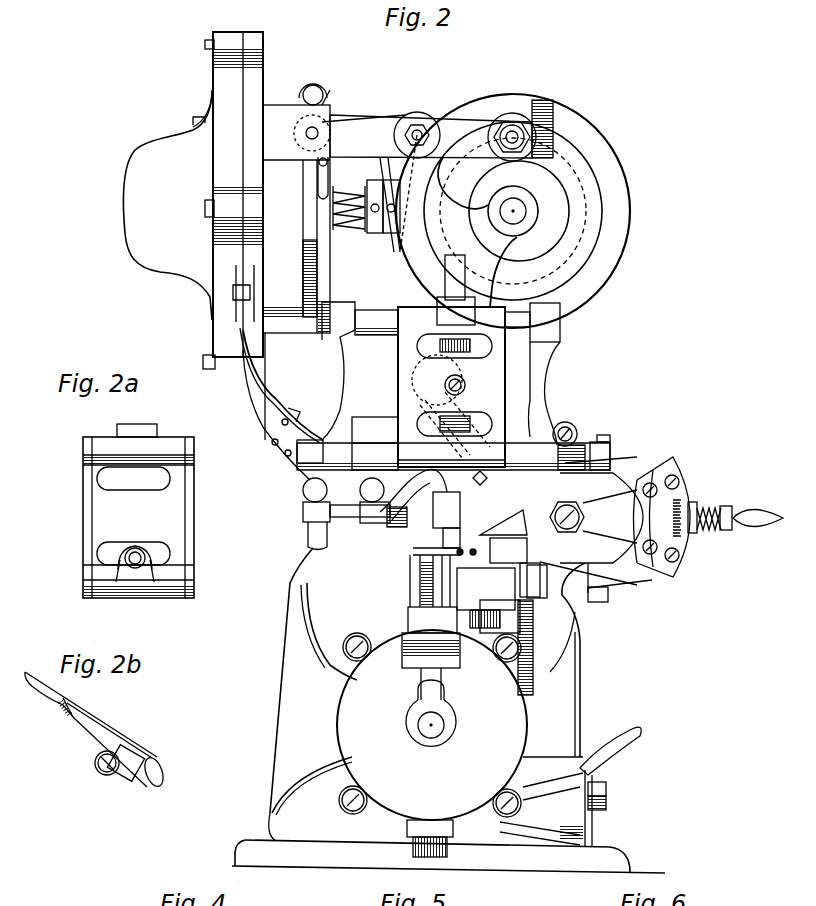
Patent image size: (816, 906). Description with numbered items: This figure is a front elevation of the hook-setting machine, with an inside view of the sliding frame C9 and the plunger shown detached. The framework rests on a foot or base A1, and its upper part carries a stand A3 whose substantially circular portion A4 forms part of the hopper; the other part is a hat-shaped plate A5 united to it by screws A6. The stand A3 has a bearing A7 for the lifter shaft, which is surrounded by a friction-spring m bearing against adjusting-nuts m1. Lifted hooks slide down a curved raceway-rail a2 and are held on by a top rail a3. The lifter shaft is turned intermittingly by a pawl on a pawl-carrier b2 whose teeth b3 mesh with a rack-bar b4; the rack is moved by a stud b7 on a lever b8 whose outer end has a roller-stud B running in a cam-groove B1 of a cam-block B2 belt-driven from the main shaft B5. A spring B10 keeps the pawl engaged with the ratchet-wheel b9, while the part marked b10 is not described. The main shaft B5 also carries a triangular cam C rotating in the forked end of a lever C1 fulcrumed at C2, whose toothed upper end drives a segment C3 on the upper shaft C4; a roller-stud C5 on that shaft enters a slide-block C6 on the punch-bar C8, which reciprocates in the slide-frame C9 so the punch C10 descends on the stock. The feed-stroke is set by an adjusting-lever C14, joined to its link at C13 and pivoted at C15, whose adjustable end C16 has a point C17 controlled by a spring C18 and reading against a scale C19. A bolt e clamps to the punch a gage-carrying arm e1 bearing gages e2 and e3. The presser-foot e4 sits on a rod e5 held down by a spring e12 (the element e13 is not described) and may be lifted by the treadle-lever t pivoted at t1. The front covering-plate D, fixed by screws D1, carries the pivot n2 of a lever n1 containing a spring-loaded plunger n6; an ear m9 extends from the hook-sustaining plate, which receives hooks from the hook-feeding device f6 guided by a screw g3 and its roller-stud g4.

In FIG. 2, the foot or base A1 is at (240, 846).
In FIG. 2, the stand A3 is at (492, 267).
In FIG. 2, the circular portion of stand A4 is at (263, 80).
In FIG. 2, the hat-shaped plate A5 is at (158, 152).
In FIG. 2, the screws A6 is at (205, 44).
In FIG. 2, the bearing A7 is at (296, 272).
In FIG. 2, the roller or stud B is at (514, 115).
In FIG. 2, the cam-groove B1 is at (557, 147).
In FIG. 2, the cam-block B2 is at (597, 135).
In FIG. 2, the main shaft B5 is at (422, 733).
In FIG. 2, the spring B10 is at (318, 168).
In FIG. 2, the pawl-carrier b2 is at (297, 135).
In FIG. 2, the teeth b3 is at (318, 85).
In FIG. 2, the rack-bar b4 is at (312, 206).
In FIG. 2, the stud b7 is at (318, 130).
In FIG. 2, the lever b8 is at (457, 124).
In FIG. 2, the ratchet-wheel b9 is at (419, 122).
In FIG. 2, the arm bar b10 is at (410, 120).
In FIG. 2, the friction-spring m is at (349, 196).
In FIG. 2, the adjusting-nuts m1 is at (383, 197).
In FIG. 2, the ear m9 is at (430, 588).
In FIG. 2, the triangular cam C is at (500, 311).
In FIG. 2A, the triangular cam C is at (93, 448).
In FIG. 2, the lever C1 is at (353, 333).
In FIG. 2, the fulcrum C2 is at (375, 443).
In FIG. 2, the segment C3 is at (568, 424).
In FIG. 2, the upper shaft C4 is at (423, 430).
In FIG. 2A, the upper shaft C4 is at (148, 558).
In FIG. 2, the roller-stud C5 is at (465, 395).
In FIG. 2, the slide-block C6 is at (528, 510).
In FIG. 2, the punch-bar C8 is at (445, 262).
In FIG. 2, the slide-frame C9 is at (403, 360).
In FIG. 2A, the slide-frame C9 is at (195, 517).
In FIG. 2, the punch C10 is at (450, 523).
In FIG. 2, the joint of link C13 is at (580, 445).
In FIG. 2, the adjusting-lever C14 is at (582, 470).
In FIG. 2, the pivot C15 is at (458, 373).
In FIG. 2, the adjustable end of lever C16 is at (763, 496).
In FIG. 2, the point C17 is at (712, 507).
In FIG. 2, the spring C18 is at (725, 532).
In FIG. 2, the scale C19 is at (692, 512).
In FIG. 2, the bolt e is at (395, 498).
In FIG. 2, the gage-carrying arm e1 is at (380, 532).
In FIG. 2, the gage e2 is at (308, 533).
In FIG. 2, the gage e3 is at (437, 537).
In FIG. 2, the presser-foot e4 is at (483, 535).
In FIG. 2, the rod e5 is at (527, 545).
In FIG. 2, the spring e12 is at (523, 697).
In FIG. 2, the pawl link e13 is at (463, 515).
In FIG. 2, the lever n1 is at (420, 570).
In FIG. 2, the pivot n2 is at (403, 655).
In FIG. 2, the plunger n6 is at (418, 695).
In FIG. 2, the front covering-plate D is at (432, 725).
In FIG. 2, the screws D1 is at (347, 642).
In FIG. 2, the treadle-lever t is at (628, 740).
In FIG. 2, the pivot t1 is at (608, 790).
In FIG. 2, the raceway-rail a2 is at (260, 430).
In FIG. 2, the top rail a3 is at (257, 403).
In FIG. 2B, the hook-feeding device f6 is at (118, 728).
In FIG. 2B, the screw g3 is at (100, 771).
In FIG. 2B, the roller-stud g4 is at (118, 772).